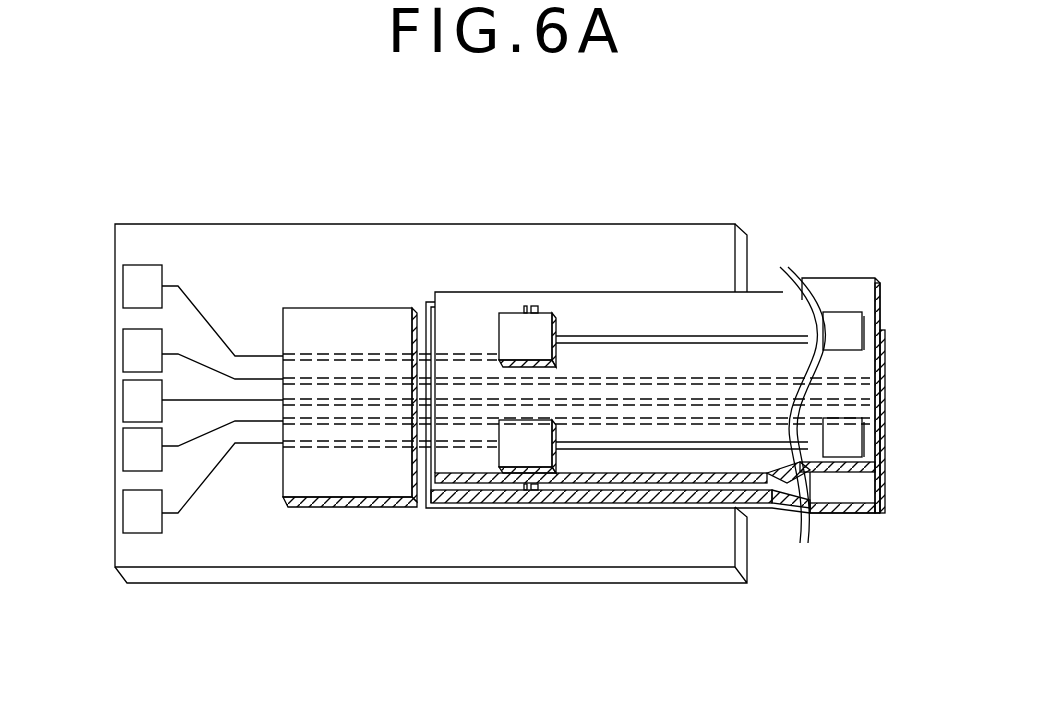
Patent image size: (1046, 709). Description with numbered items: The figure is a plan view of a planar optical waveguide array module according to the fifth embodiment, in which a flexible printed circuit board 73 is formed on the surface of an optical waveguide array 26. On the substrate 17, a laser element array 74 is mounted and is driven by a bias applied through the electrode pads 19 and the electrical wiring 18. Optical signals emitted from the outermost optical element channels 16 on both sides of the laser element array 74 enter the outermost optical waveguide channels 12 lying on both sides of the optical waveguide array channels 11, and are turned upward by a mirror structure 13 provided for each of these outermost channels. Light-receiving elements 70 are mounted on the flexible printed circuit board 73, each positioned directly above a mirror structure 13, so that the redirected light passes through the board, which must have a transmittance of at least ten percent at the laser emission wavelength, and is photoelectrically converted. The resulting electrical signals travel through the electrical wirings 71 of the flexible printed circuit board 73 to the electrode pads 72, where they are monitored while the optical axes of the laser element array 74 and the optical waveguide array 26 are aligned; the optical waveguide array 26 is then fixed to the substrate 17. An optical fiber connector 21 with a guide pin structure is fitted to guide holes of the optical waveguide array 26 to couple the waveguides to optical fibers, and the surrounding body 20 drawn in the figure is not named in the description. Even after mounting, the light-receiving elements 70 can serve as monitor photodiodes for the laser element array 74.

The optical waveguide array channels 11 is at (425, 510).
The outermost optical waveguide channels 12 is at (457, 352).
The mirror structure for light redirection 13 is at (535, 306).
The outermost optical element channels 16 is at (355, 443).
The substrate 17 is at (290, 292).
The electrical wiring 18 is at (198, 308).
The electrode pads 19 is at (138, 278).
The mounting board 20 is at (670, 247).
The optical fiber connector 21 is at (517, 258).
The optical waveguide array 26 is at (826, 517).
The light-receiving elements 70 is at (540, 330).
The electrical wirings 71 is at (695, 333).
The electrode pads 72 is at (846, 325).
The flexible printed circuit board 73 is at (762, 317).
The laser element array 74 is at (307, 476).